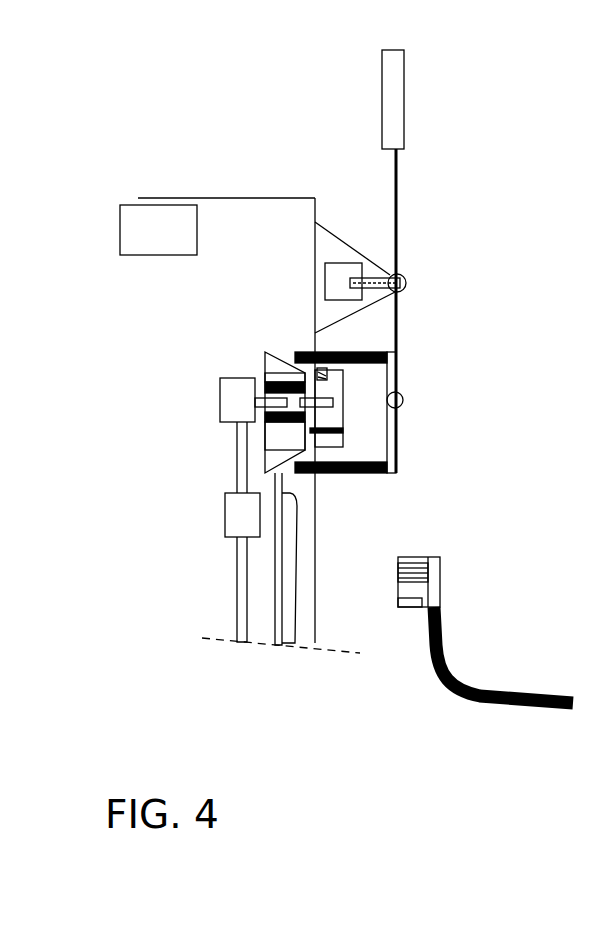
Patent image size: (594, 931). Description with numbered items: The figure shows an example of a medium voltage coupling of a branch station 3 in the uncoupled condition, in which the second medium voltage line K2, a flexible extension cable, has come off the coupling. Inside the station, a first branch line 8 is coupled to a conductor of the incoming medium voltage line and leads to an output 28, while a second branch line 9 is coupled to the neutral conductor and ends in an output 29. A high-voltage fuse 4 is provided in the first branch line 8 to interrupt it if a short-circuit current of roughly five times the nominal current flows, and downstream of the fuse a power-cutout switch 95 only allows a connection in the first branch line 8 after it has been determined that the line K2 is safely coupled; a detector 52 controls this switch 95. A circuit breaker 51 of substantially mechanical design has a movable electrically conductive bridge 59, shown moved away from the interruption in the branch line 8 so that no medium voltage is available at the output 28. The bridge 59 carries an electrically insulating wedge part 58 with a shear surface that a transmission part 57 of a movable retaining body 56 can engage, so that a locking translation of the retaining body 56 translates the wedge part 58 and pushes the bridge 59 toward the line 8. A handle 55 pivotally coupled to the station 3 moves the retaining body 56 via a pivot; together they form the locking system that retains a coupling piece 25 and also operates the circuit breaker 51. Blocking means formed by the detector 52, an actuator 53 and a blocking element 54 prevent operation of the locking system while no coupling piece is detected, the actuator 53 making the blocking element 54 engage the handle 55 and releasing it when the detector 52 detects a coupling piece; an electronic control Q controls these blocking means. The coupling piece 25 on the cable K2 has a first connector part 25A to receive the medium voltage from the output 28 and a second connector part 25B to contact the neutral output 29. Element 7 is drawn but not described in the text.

The branch station 3 is at (170, 195).
The electronic control Q is at (160, 244).
The circuit breaker 51 is at (267, 320).
The actuator 53 is at (346, 271).
The blocking element 54 is at (404, 278).
The handle 55 is at (398, 176).
The retaining body 56 is at (388, 370).
The transmission part 57 is at (302, 350).
The wedge part 58 is at (275, 366).
The bridge 59 is at (263, 382).
The power-cutout switch 95 is at (225, 400).
The detector 52 is at (327, 380).
The output 28 is at (332, 402).
The output 29 is at (333, 437).
The high-voltage fuse 4 is at (249, 532).
The first branch line 8 is at (238, 553).
The second branch line 9 is at (273, 632).
The hose 7 is at (295, 623).
The coupling piece 25 is at (429, 601).
The first connector part 25A is at (400, 582).
The second connector part 25B is at (402, 608).
The second medium voltage line K2 is at (550, 712).